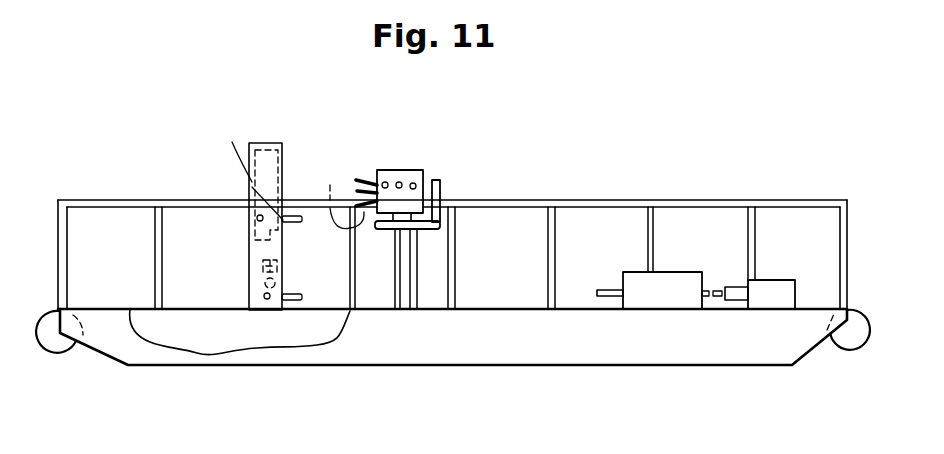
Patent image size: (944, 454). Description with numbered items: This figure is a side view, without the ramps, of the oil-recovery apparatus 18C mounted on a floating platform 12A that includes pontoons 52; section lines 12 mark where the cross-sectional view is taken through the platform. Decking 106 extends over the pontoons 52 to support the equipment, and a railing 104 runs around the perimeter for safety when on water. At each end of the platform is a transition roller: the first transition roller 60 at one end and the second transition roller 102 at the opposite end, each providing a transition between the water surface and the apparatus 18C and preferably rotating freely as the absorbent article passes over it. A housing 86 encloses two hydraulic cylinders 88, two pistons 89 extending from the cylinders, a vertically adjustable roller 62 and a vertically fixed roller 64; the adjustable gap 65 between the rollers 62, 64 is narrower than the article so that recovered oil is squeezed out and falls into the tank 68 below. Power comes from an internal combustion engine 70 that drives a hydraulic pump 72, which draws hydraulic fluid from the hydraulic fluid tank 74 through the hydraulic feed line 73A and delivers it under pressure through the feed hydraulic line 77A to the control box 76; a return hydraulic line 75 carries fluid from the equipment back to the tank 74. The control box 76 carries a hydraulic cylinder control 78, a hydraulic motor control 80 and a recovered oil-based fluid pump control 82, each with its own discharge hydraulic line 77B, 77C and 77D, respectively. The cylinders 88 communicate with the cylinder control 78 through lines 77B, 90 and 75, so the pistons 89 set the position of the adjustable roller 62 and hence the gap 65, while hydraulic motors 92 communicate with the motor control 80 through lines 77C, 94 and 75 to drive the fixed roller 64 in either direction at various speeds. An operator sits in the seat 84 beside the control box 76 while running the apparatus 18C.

The section line 12- 12 is at (40, 150).
The floating platform 12A is at (415, 374).
The apparatus 18C is at (143, 190).
The pontoons 52 is at (444, 345).
The first transition roller 60 is at (72, 343).
The vertically adjustable roller 62 is at (282, 268).
The vertically fixed roller 64 is at (284, 281).
The adjustable gap 65 is at (243, 282).
The tank 68 is at (200, 343).
The internal combustion engine 70 is at (773, 300).
The hydraulic pump 72 is at (735, 309).
The hydraulic feed line 73A is at (713, 291).
The hydraulic fluid tank 74 is at (671, 284).
The return hydraulic line 75 is at (607, 287).
The control box 76 is at (423, 170).
The feed hydraulic line 77A is at (447, 203).
The discharge hydraulic line 77B is at (370, 182).
The discharge hydraulic line 77C is at (355, 190).
The discharge hydraulic line 77D is at (352, 200).
The hydraulic cylinder control 78 is at (386, 182).
The hydraulic motor control 80 is at (400, 182).
The recovered oil-based fluid pump control 82 is at (415, 183).
The seat 84 is at (425, 242).
The housing 86 is at (267, 143).
The hydraulic cylinders 88 is at (243, 150).
The pistons 89 is at (284, 248).
The hydraulic line 90 is at (258, 210).
The hydraulic motors 92 is at (262, 306).
The hydraulic line 94 is at (293, 312).
The second transition roller 102 is at (837, 348).
The railing 104 is at (631, 200).
The decking 106 is at (527, 308).